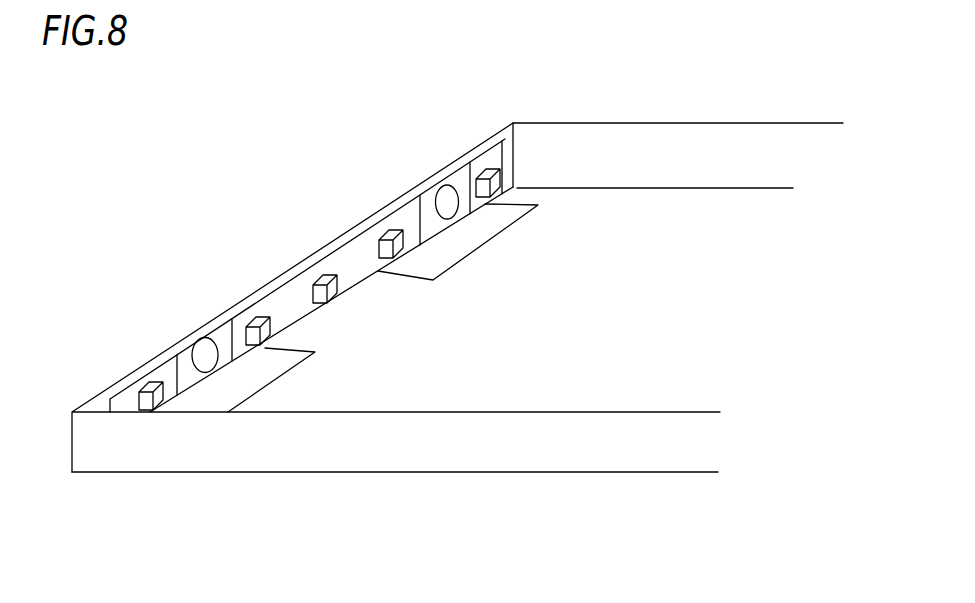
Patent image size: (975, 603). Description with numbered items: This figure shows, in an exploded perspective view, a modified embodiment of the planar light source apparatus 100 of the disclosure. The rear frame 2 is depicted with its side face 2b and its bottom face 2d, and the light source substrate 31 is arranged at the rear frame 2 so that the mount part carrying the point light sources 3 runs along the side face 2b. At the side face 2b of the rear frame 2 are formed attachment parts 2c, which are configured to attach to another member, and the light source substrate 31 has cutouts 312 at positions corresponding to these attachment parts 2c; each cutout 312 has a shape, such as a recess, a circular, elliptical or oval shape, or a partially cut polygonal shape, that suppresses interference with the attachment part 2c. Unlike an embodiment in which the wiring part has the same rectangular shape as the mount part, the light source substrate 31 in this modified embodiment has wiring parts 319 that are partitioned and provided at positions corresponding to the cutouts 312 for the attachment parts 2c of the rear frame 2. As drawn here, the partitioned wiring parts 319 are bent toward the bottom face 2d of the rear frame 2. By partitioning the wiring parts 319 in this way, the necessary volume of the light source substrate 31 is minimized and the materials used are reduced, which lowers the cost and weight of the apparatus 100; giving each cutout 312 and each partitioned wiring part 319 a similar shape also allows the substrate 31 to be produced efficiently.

The planar light source apparatus 100 is at (552, 484).
The rear frame 2 is at (248, 445).
The side face 2b is at (407, 200).
The attachment part 2c is at (210, 340).
The bottom face 2d is at (665, 213).
The point light source 3 is at (492, 180).
The light source substrate 31 is at (501, 142).
The cutout 312 is at (190, 365).
The partitioned wiring part 319 is at (197, 408).